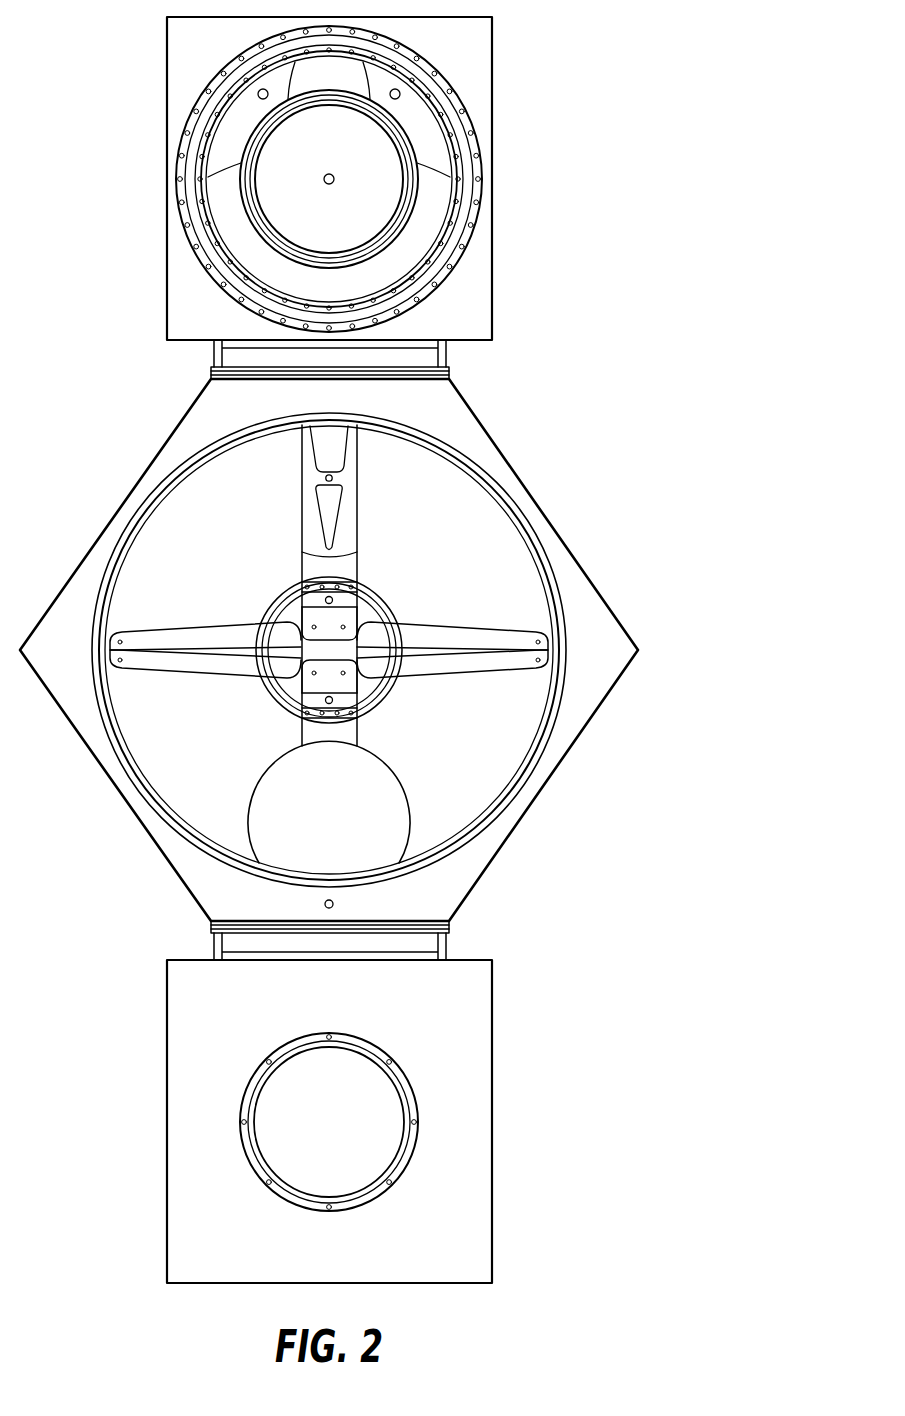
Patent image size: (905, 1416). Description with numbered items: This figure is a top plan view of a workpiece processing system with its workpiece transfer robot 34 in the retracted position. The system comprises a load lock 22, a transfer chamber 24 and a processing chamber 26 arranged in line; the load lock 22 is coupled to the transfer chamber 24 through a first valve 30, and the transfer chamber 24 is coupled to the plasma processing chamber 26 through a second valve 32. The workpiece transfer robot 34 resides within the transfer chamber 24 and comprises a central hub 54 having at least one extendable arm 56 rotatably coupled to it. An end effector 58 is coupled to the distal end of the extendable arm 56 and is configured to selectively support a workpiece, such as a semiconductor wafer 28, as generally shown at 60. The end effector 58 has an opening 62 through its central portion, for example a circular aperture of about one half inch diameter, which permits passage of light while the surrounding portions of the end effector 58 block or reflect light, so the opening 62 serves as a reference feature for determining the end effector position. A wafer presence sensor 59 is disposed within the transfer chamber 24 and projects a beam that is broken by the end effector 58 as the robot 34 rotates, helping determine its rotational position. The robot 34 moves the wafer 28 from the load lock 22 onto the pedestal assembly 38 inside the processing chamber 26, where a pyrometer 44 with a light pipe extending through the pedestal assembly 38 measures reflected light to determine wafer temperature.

The load lock 22 is at (343, 1138).
The transfer chamber 24 is at (525, 483).
The processing chamber 26 is at (492, 47).
The semiconductor wafer 28 is at (343, 835).
The first valve 30 is at (213, 950).
The second valve 32 is at (212, 355).
The workpiece transfer robot 34 is at (386, 585).
The pedestal assembly 38 is at (413, 148).
The pyrometer 44 is at (334, 181).
The central hub 54 is at (272, 597).
The extendable arm 56 is at (548, 638).
The end effector 58 is at (357, 510).
The wafer presence sensor 59 is at (334, 904).
The workpiece supported on end effector 60 is at (366, 802).
The opening 62 is at (326, 481).